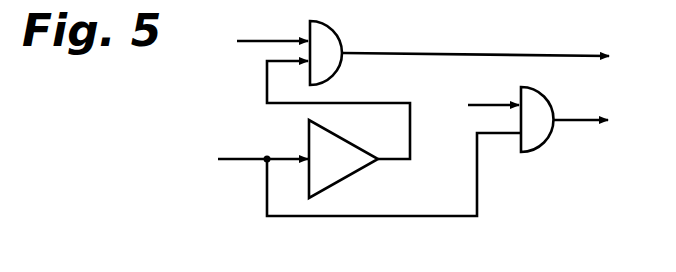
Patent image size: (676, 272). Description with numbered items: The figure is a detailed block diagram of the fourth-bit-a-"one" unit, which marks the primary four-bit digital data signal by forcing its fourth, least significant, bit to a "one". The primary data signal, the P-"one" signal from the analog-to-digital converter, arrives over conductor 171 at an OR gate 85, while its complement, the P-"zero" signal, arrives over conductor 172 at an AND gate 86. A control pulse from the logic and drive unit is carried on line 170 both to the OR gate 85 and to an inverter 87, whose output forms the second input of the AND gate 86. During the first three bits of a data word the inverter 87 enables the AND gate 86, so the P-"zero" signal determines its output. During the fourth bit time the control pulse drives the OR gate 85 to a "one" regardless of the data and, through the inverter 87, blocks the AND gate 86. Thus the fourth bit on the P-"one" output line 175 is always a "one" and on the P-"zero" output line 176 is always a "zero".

The OR gate 85 is at (543, 139).
The AND gate 86 is at (330, 35).
The inverter 87 is at (348, 172).
The line 170 is at (239, 156).
The conductor 171 is at (482, 104).
The conductor 172 is at (248, 40).
The P-"1" output line 175 is at (575, 118).
The P-"0" output line 176 is at (450, 55).